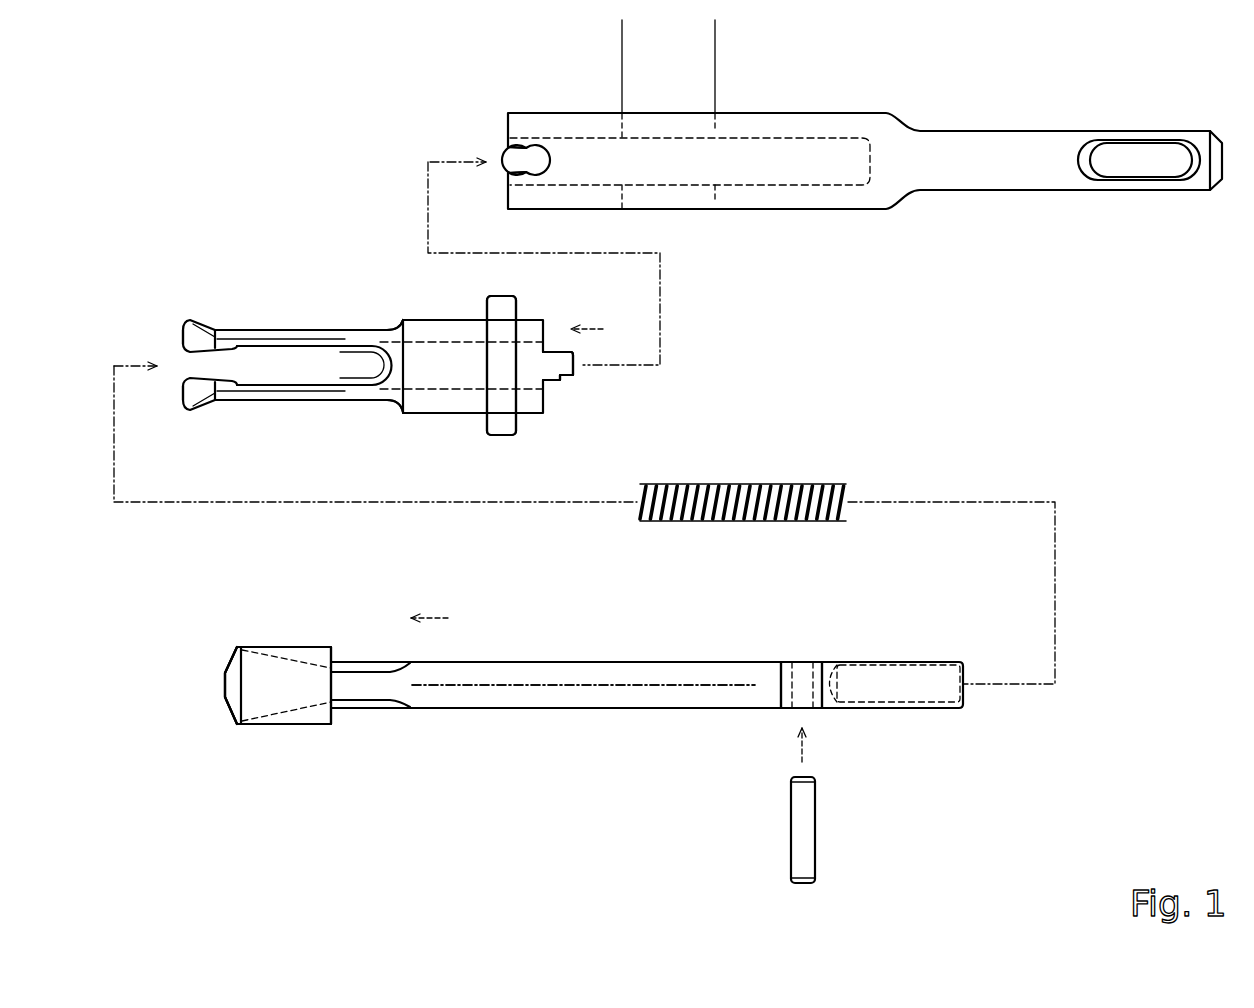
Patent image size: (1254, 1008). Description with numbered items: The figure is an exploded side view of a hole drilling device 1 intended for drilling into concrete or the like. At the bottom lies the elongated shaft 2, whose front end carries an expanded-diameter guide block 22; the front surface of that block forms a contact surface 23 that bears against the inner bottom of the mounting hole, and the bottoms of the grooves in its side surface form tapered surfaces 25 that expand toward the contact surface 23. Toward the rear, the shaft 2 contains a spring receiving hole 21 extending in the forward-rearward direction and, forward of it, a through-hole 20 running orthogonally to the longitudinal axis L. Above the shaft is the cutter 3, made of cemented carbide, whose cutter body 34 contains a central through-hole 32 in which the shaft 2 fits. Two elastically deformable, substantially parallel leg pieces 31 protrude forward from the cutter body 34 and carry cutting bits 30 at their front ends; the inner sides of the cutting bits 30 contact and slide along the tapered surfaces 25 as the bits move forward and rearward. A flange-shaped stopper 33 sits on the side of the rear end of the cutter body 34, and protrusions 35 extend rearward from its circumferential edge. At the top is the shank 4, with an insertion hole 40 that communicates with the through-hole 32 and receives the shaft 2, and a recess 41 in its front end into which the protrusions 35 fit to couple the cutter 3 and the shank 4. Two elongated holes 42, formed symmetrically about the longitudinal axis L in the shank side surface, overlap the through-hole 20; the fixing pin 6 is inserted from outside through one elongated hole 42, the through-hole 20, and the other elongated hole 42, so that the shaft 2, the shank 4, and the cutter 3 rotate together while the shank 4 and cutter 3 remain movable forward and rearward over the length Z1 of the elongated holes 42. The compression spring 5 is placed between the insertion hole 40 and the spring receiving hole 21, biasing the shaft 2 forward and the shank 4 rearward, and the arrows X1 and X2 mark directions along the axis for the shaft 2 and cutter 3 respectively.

The hole drilling device 1 is at (1119, 640).
The elongated shaft 2 is at (621, 768).
The cutter 3 is at (563, 416).
The shank 4 is at (985, 138).
The compression spring 5 is at (762, 483).
The fixing pin 6 is at (816, 825).
The through-hole 20 is at (795, 677).
The spring receiving hole 21 is at (895, 671).
The expanded-diameter guide block 22 is at (274, 694).
The contact surface 23 is at (225, 685).
The tapered surfaces 25 is at (292, 656).
The cutting bits 30 is at (205, 328).
The leg pieces 31 is at (305, 330).
The through-hole 32 is at (440, 353).
The stopper 33 is at (507, 311).
The cutter body 34 is at (425, 318).
The protrusions 35 is at (574, 372).
The insertion hole 40 is at (796, 140).
The recess 41 is at (505, 162).
The elongated holes 42 is at (625, 130).
The longitudinal axis L is at (645, 685).
The direction X1 is at (447, 619).
The direction X2 is at (605, 330).
The length Z1 is at (715, 32).